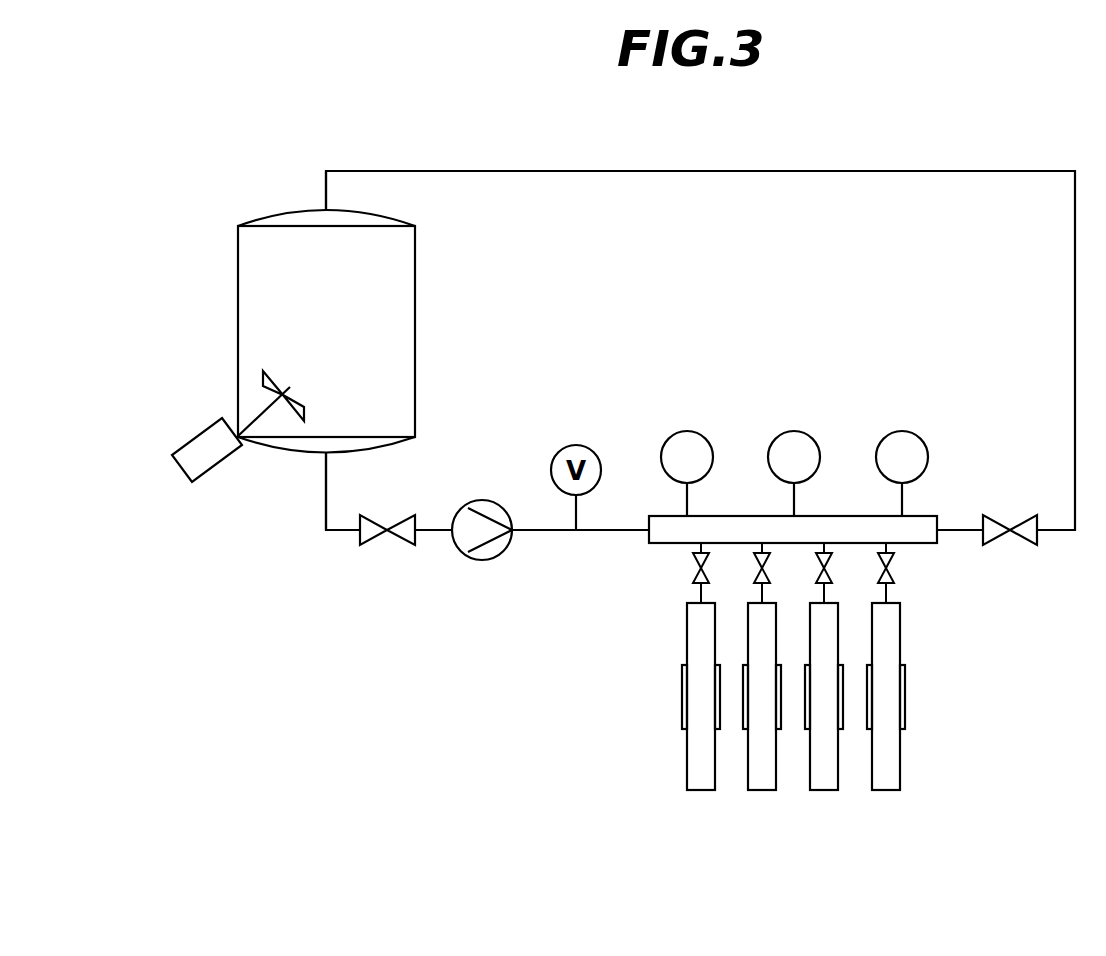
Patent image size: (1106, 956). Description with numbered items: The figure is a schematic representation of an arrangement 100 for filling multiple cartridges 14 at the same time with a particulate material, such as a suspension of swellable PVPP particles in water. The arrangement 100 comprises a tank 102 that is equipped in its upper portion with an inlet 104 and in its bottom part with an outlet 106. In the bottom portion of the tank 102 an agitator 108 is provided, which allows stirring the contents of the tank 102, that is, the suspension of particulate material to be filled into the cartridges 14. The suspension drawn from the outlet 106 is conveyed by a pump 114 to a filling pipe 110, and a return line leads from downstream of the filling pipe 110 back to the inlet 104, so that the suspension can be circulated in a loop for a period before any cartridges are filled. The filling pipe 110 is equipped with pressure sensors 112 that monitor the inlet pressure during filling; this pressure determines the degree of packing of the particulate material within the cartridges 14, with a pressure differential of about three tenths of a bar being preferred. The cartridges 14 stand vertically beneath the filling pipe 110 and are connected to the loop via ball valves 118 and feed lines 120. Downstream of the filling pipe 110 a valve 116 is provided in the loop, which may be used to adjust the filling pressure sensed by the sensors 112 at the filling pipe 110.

The arrangement 100 is at (972, 150).
The tank 102 is at (416, 313).
The inlet 104 is at (323, 208).
The outlet 106 is at (325, 455).
The agitator 108 is at (200, 452).
The filling pipe 110 is at (736, 530).
The pressure sensor 112 is at (688, 441).
The pump 114 is at (486, 553).
The valve 116 is at (1024, 526).
The ball valve 118 is at (893, 558).
The feed line 120 is at (887, 592).
The cartridge 14 is at (704, 773).